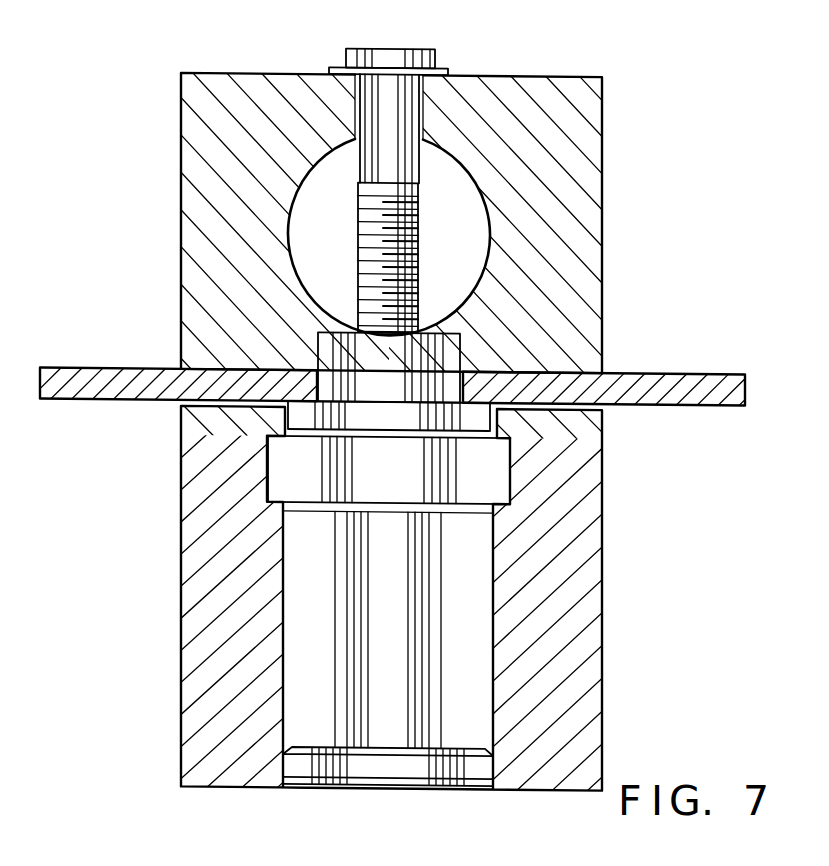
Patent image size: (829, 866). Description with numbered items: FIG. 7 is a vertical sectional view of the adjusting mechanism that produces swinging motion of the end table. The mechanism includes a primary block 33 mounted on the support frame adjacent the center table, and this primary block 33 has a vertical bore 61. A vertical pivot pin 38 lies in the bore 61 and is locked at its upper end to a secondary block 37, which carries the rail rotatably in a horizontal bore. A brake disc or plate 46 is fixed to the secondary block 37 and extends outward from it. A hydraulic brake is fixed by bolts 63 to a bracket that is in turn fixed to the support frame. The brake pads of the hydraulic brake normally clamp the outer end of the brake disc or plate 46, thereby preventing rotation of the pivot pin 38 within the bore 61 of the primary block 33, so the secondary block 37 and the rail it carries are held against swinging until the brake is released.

The primary block 33 is at (583, 625).
The secondary block 37 is at (585, 213).
The vertical pivot pin 38 is at (423, 678).
The brake disc or plate 46 is at (696, 398).
The vertical bore 61 is at (497, 585).
The bolts 63 is at (488, 205).